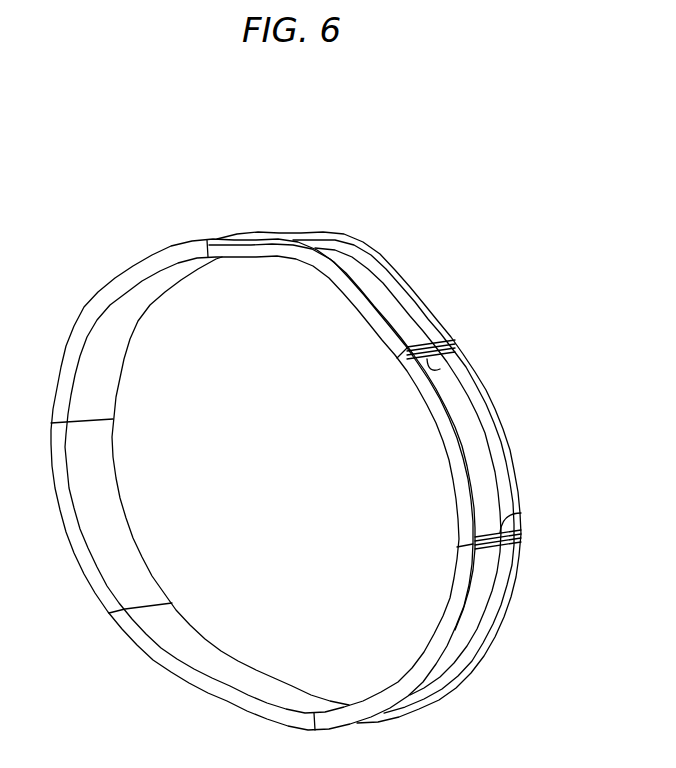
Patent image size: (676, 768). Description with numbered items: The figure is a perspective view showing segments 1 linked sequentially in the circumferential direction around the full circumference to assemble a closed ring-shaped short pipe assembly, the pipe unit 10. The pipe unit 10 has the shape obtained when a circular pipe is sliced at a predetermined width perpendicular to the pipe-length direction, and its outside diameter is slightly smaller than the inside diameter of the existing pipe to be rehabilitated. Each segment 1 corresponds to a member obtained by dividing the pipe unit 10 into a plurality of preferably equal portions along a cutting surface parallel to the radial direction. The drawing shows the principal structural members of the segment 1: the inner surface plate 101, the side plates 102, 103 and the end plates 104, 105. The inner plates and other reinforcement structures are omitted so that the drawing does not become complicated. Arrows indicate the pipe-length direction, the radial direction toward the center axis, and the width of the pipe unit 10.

The segment 1 is at (64, 350).
The pipe unit 10 is at (190, 222).
The inner surface plate 101 is at (97, 376).
The side plate 102 is at (452, 487).
The side plate 103 is at (506, 393).
The end plate 104 is at (432, 366).
The end plate 105 is at (503, 523).